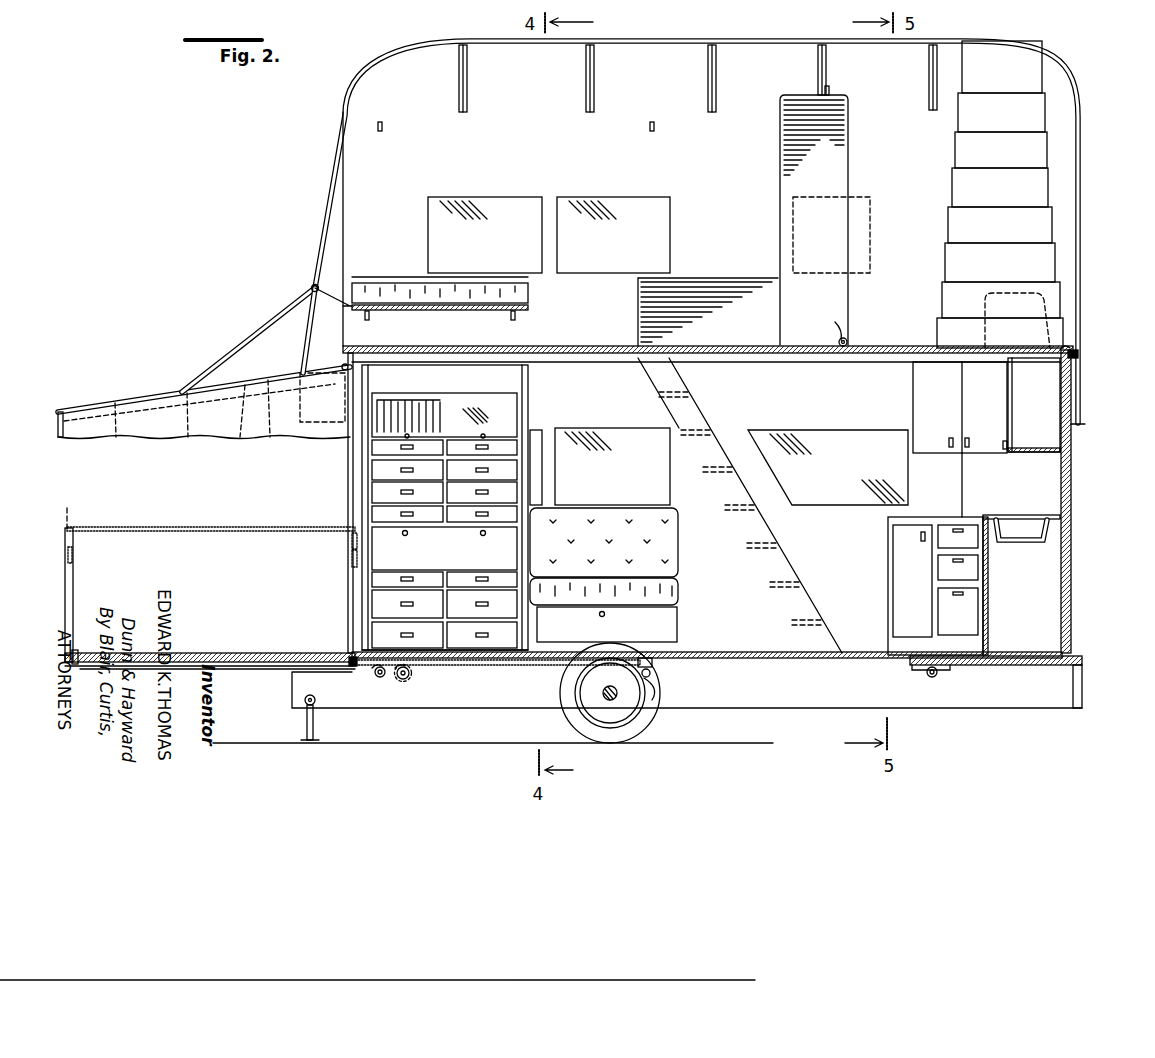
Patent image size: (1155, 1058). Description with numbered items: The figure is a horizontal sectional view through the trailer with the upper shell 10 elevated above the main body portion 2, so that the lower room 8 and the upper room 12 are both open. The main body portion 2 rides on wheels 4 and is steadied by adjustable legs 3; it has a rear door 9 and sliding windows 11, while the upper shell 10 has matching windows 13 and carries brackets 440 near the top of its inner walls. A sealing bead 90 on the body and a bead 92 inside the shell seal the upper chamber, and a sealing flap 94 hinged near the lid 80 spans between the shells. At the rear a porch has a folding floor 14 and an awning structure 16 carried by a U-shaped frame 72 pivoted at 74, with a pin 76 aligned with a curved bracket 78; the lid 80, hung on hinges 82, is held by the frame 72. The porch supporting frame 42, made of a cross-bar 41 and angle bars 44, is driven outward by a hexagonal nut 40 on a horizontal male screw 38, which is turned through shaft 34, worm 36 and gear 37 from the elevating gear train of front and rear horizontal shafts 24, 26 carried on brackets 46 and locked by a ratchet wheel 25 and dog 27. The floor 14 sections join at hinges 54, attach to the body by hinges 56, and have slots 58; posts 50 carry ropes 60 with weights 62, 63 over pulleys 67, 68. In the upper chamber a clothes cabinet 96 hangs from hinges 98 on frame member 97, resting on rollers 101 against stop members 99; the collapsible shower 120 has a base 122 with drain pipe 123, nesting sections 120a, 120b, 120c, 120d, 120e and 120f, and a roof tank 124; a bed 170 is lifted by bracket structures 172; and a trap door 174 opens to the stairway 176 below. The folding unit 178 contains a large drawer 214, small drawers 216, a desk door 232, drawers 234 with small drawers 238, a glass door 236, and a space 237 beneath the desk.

The main body portion 2 is at (1083, 536).
The adjustable legs 3 is at (313, 722).
The wheels 4 is at (646, 720).
The lower room 8 is at (828, 491).
The door 9 is at (347, 450).
The upper shell 10 is at (1084, 84).
The windows 11 is at (629, 440).
The upper room 12 is at (700, 168).
The windows 13 is at (490, 206).
The folding floor 14 is at (230, 652).
The awning structure 16 is at (142, 395).
The front horizontal shaft 24 is at (938, 678).
The ratchet wheel 25 is at (413, 673).
The rear horizontal shaft 26 is at (408, 681).
The dog 27 is at (372, 680).
The shaft 34 is at (655, 690).
The worm 36 is at (651, 674).
The gear 37 is at (654, 664).
The horizontal male screw 38 is at (515, 666).
The hexagonal nut 40 is at (378, 650).
The cross-bar 41 is at (350, 670).
The porch supporting frame 42 is at (276, 679).
The angle bars 44 is at (185, 666).
The brackets 46 is at (925, 675).
The posts 50 is at (73, 583).
The hinges 54 is at (218, 666).
The hinges 56 is at (348, 656).
The slots 58 is at (77, 653).
The ropes 60 is at (239, 527).
The weight 62 is at (73, 553).
The weight 63 is at (352, 561).
The pulley 67 is at (64, 509).
The pulley 68 is at (352, 539).
The U-shaped frame 72 is at (62, 410).
The pivot 74 is at (322, 397).
The pin 76 is at (307, 373).
The curved bracket 78 is at (343, 360).
The lid 80 is at (256, 343).
The hinges 82 is at (310, 287).
The sealing bead 90 is at (1080, 349).
The sealing bead 92 is at (1079, 355).
The sealing flap 94 is at (330, 293).
The clothes cabinet 96 is at (832, 172).
The frame member 97 is at (830, 90).
The hinges 98 is at (817, 88).
The stop members 99 is at (849, 343).
The supporting rollers 101 is at (824, 324).
The collapsible shower 120 is at (1018, 185).
The shower section 120a is at (956, 291).
The shower section 120b is at (960, 258).
The shower section 120c is at (962, 220).
The shower section 120d is at (965, 184).
The shower section 120e is at (962, 150).
The shower section 120f is at (962, 121).
The pan-shaped base 122 is at (944, 332).
The drain pipe 123 is at (1073, 463).
The tank 124 is at (1010, 70).
The bed 170 is at (530, 297).
The bracket structures 172 is at (371, 317).
The trap door 174 is at (703, 292).
The stairway 176 is at (696, 419).
The folding unit 178 is at (542, 426).
The large drawer 214 is at (472, 662).
The small drawers 216 is at (472, 658).
The door 232 is at (508, 556).
The drawers 234 is at (510, 490).
The glass door 236 is at (413, 400).
The space 237 is at (442, 578).
The small drawers 238 is at (432, 445).
The bracket 440 is at (383, 130).